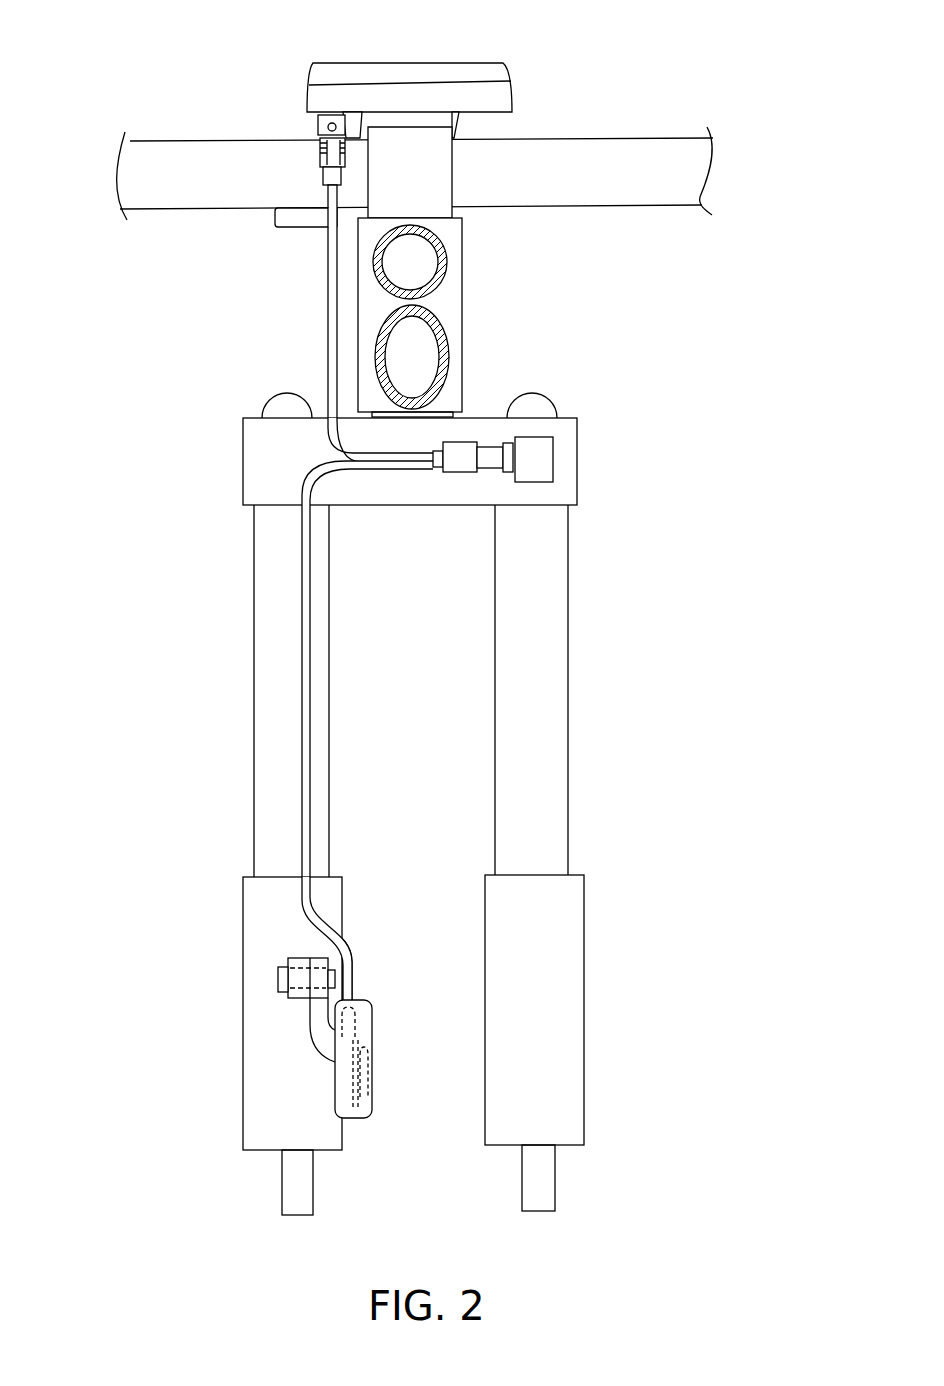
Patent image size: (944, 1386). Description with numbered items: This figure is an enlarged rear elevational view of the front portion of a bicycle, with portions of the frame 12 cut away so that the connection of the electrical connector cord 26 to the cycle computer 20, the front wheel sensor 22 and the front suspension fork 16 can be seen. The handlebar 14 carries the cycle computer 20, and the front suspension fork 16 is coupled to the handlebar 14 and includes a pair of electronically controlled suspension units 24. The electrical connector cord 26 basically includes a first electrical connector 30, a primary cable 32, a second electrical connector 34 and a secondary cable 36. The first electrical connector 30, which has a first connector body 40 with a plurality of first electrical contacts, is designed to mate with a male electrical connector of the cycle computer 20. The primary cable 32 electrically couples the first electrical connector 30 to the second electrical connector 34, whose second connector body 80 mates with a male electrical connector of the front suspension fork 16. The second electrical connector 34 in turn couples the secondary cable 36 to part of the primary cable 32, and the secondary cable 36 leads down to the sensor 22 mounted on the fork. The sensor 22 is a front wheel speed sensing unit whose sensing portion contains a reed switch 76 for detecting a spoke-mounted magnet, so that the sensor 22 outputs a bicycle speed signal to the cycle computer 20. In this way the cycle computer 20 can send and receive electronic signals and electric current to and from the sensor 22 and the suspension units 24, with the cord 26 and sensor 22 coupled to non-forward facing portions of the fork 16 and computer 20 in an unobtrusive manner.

The frame 12 is at (442, 335).
The handlebar 14 is at (562, 137).
The front suspension fork 16 is at (584, 424).
The cycle computer 20 is at (436, 56).
The electrical device (front wheel sensor) 22 is at (373, 1067).
The electronically controlled suspension units 24 is at (346, 883).
The electrical connector cord 26 is at (533, 348).
The first electrical connector 30 is at (317, 126).
The primary cable 32 is at (325, 322).
The second electrical connector 34 is at (460, 470).
The secondary cable 36 is at (303, 715).
The first connector body 40 is at (317, 153).
The reed switch 76 is at (360, 1036).
The second connector body 80 is at (490, 452).